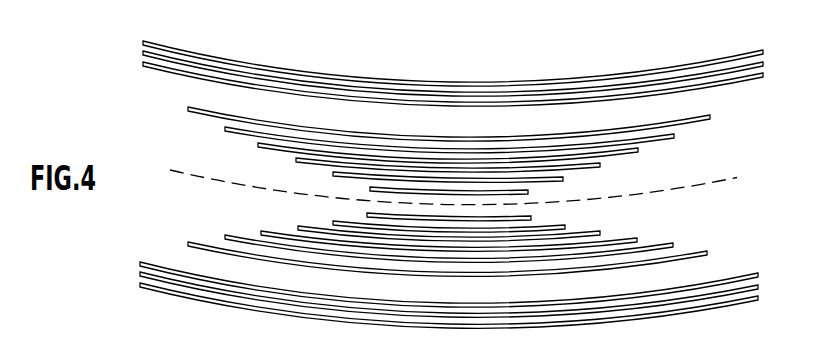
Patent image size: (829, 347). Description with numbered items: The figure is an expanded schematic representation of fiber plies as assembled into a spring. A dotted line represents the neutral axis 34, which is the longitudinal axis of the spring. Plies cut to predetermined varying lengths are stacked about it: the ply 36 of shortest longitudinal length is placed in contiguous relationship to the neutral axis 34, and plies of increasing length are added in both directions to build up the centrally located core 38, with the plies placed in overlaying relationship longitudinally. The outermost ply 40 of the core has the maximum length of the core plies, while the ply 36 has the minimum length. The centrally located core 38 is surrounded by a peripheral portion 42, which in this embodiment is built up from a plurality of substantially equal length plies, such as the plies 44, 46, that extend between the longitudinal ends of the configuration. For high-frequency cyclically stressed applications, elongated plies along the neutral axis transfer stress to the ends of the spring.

The neutral axis 34 is at (705, 185).
The ply of shortest longitudinal length 36 is at (528, 218).
The centrally located core 38 is at (219, 193).
The outermost ply 40 is at (601, 269).
The peripheral portion 42 is at (176, 82).
The peripheral ply 44 is at (735, 82).
The peripheral ply 46 is at (728, 277).